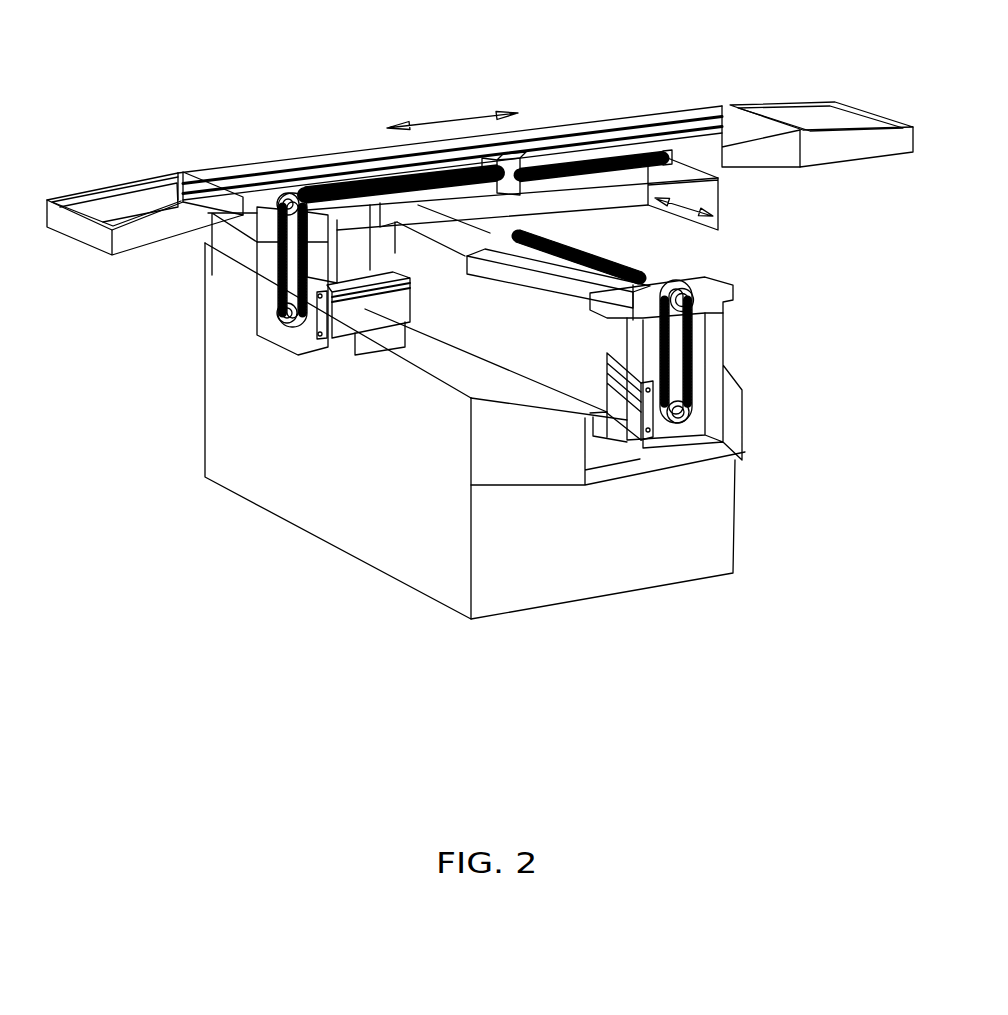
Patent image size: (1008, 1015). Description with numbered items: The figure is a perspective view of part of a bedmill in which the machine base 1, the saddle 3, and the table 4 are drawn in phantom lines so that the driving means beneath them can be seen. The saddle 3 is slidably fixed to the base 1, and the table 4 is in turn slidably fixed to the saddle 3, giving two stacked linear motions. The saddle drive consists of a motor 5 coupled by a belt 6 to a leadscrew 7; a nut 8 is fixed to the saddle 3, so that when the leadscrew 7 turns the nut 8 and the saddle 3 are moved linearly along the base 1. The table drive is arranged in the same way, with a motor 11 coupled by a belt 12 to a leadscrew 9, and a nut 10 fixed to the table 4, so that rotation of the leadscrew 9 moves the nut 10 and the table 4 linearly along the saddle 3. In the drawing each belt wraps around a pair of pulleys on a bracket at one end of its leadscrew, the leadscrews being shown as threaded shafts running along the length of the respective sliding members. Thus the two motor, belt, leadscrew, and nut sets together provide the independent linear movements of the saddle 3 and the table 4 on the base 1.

The base 1 is at (683, 580).
The saddle 3 is at (725, 223).
The table 4 is at (873, 158).
The motor 5 is at (655, 427).
The belt 6 is at (695, 365).
The leadscrew 7 is at (640, 275).
The nut 8 is at (518, 235).
The leadscrew 9 is at (627, 153).
The nut 10 is at (511, 172).
The motor 11 is at (352, 310).
The belt 12 is at (273, 278).